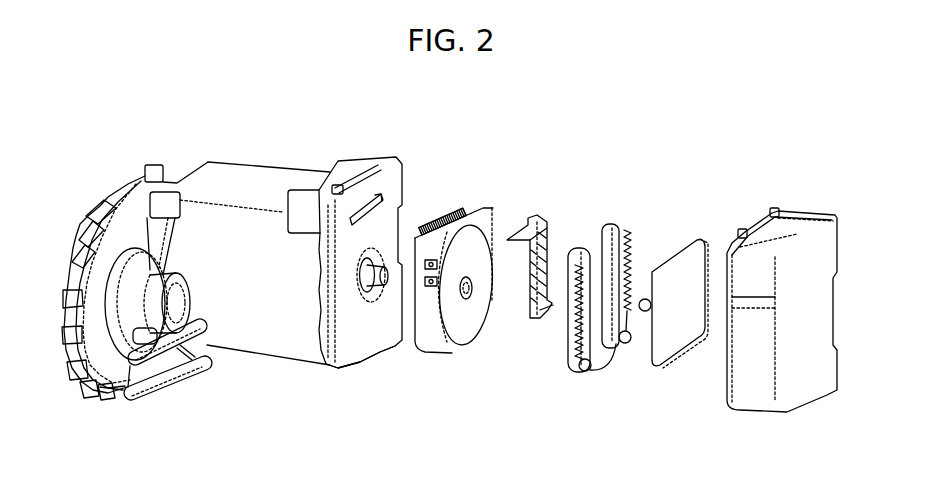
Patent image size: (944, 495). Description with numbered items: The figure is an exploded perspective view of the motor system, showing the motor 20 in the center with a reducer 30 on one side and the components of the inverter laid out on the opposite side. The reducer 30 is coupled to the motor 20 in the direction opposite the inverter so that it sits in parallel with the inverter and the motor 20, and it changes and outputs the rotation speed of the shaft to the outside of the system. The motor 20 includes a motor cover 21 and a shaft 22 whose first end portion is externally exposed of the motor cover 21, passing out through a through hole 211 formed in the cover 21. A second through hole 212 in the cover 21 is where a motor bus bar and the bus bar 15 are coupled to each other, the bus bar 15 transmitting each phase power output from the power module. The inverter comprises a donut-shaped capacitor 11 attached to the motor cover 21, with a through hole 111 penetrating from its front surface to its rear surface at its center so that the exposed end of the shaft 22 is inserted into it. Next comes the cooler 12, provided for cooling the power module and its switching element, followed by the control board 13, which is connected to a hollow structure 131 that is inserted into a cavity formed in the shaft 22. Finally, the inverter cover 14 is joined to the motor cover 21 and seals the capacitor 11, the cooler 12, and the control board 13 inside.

The reducer 30 is at (100, 205).
The motor 20 is at (265, 175).
The motor cover 21 is at (349, 263).
The through hole 211 is at (350, 368).
The through hole 212 is at (378, 196).
The shaft 22 is at (370, 302).
The capacitor 11 is at (460, 278).
The through hole 111 is at (473, 290).
The cooler 12 is at (614, 222).
The control board 13 is at (667, 318).
The hollow structure 131 is at (645, 312).
The inverter cover 14 is at (774, 266).
The bus bar 15 is at (537, 215).